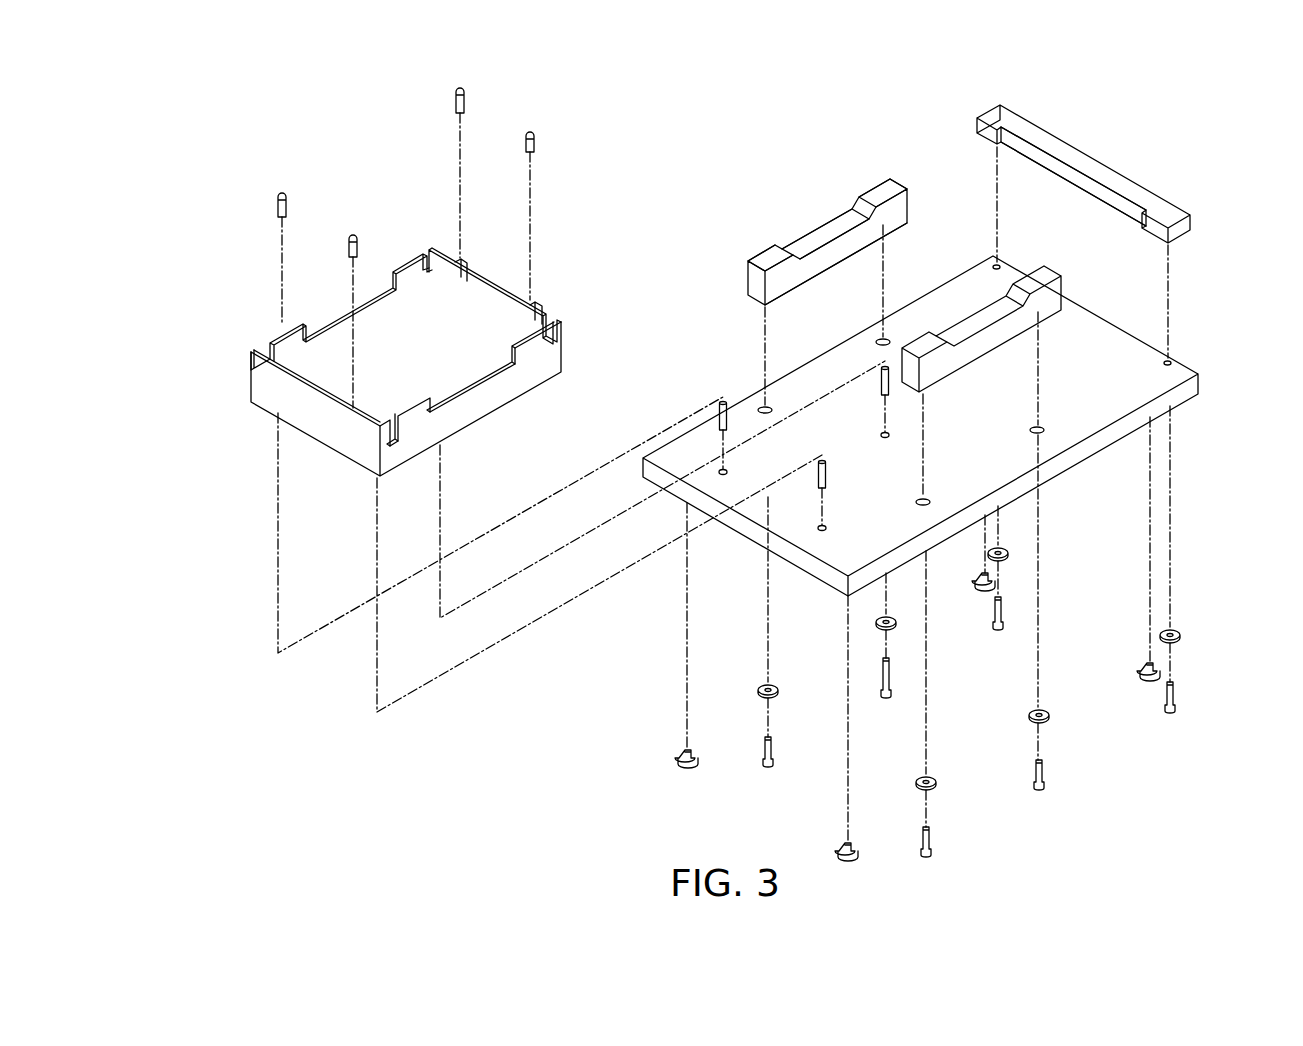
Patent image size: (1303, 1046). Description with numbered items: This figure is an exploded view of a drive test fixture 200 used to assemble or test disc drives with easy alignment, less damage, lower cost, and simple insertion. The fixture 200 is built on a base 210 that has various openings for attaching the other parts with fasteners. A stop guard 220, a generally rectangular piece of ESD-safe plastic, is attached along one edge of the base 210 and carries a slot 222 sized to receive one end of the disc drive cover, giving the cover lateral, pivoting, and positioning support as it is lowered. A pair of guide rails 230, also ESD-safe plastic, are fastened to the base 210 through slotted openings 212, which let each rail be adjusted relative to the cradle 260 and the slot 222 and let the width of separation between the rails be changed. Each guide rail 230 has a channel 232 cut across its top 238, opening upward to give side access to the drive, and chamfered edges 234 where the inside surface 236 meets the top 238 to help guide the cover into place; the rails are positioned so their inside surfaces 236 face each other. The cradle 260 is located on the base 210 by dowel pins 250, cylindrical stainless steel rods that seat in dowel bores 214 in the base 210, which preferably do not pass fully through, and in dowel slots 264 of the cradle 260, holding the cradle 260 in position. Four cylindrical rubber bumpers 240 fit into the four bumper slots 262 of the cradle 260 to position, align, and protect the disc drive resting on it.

The drive test fixture 200 is at (1213, 162).
The base 210 is at (1200, 378).
The slotted openings 212 is at (930, 500).
The dowel bores 214 is at (827, 524).
The stop guard 220 is at (1098, 153).
The slot 222 is at (1093, 186).
The guide rails 230 is at (893, 216).
The channel 232 is at (830, 235).
The chamfered edges 234 is at (770, 252).
The inside surface 236 is at (773, 290).
The top 238 is at (889, 181).
The bumpers 240 is at (455, 100).
The dowel pins 250 is at (720, 406).
The cradle 260 is at (250, 377).
The bumper slots 262 is at (537, 301).
The dowel slots 264 is at (441, 441).